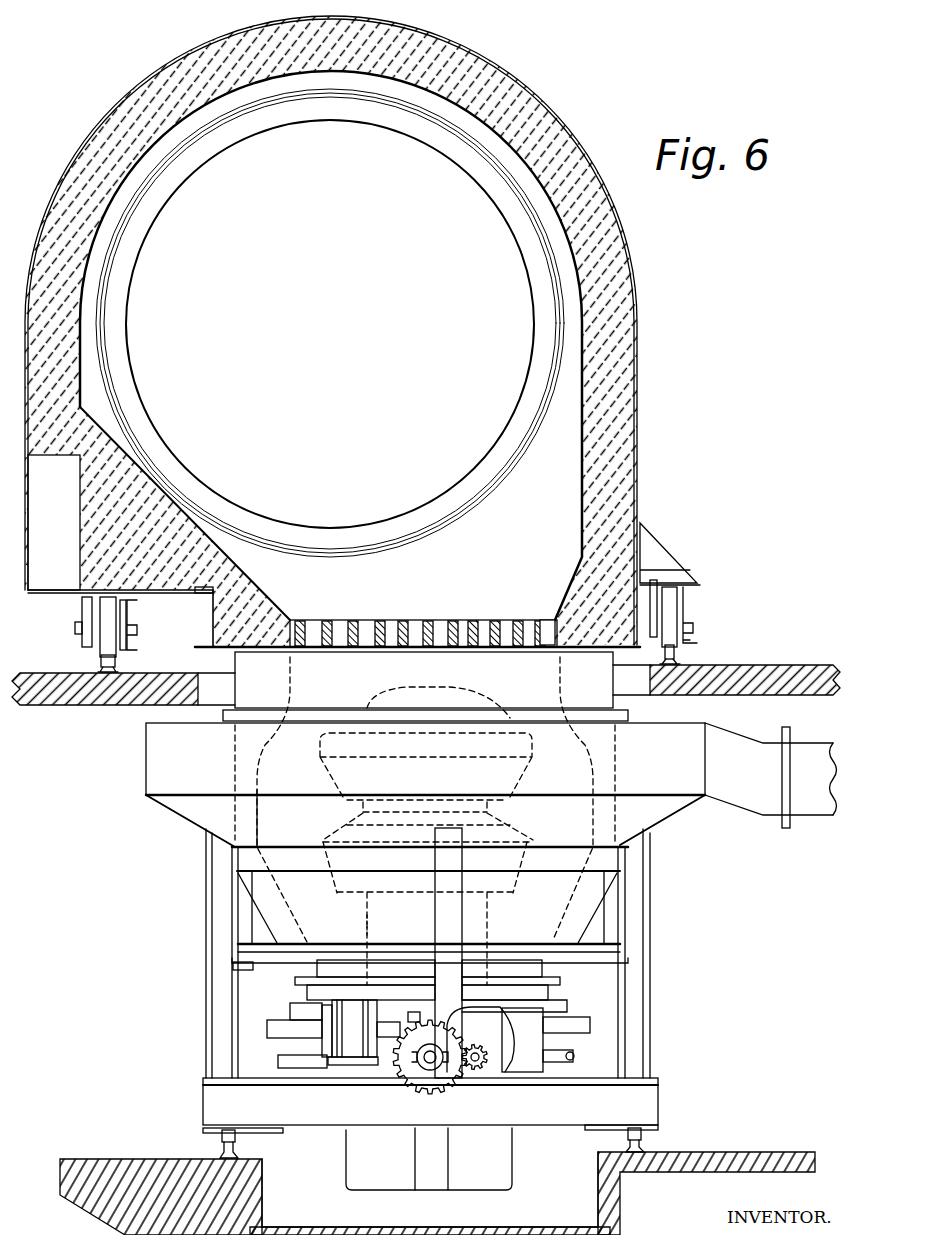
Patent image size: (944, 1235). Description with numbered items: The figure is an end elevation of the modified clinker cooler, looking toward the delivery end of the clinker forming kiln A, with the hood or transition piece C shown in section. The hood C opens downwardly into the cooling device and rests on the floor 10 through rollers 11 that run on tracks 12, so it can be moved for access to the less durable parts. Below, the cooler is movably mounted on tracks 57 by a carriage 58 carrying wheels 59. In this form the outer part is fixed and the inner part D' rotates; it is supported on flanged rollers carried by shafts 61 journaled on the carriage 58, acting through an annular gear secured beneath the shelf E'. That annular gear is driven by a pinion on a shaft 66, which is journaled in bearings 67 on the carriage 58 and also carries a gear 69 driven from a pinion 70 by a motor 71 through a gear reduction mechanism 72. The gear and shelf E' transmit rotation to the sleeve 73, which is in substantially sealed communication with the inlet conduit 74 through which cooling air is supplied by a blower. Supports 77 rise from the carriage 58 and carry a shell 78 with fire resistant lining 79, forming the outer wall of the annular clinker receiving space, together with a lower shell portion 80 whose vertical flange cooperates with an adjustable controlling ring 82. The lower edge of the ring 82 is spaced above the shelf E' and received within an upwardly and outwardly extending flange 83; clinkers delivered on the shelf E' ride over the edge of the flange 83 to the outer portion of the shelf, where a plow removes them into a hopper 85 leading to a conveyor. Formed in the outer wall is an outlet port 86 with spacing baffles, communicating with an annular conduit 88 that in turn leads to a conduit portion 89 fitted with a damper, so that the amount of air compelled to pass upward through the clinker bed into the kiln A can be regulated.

The hood or transition piece C is at (607, 283).
The clinker forming kiln A is at (432, 527).
The floor 10 is at (47, 694).
The rollers 11 is at (107, 620).
The tracks 12 is at (100, 664).
The annular conduit 88 is at (155, 772).
The conduit portion 89 is at (813, 748).
The outlet port 86 is at (657, 810).
The inner part D' is at (425, 821).
The fire resistant lining 79 is at (248, 822).
The supports 77 is at (212, 902).
The shell 78 is at (620, 902).
The sleeve 73 is at (365, 924).
The lower shell portion 80 is at (398, 957).
The adjustable controlling ring 82 is at (540, 988).
The flange 83 is at (297, 1013).
The motor 71 is at (327, 1038).
The shelf E' is at (218, 1031).
The shafts 61 is at (302, 1062).
The gear 69 is at (405, 1065).
The shaft 66 is at (430, 1065).
The pinion 70 is at (473, 1068).
The bearings 67 is at (440, 1050).
The hopper 85 is at (532, 1055).
The gear reduction mechanism 72 is at (492, 1032).
The carriage 58 is at (635, 1102).
The wheels 59 is at (220, 1132).
The tracks 57 is at (238, 1150).
The inlet conduit 74 is at (497, 1180).